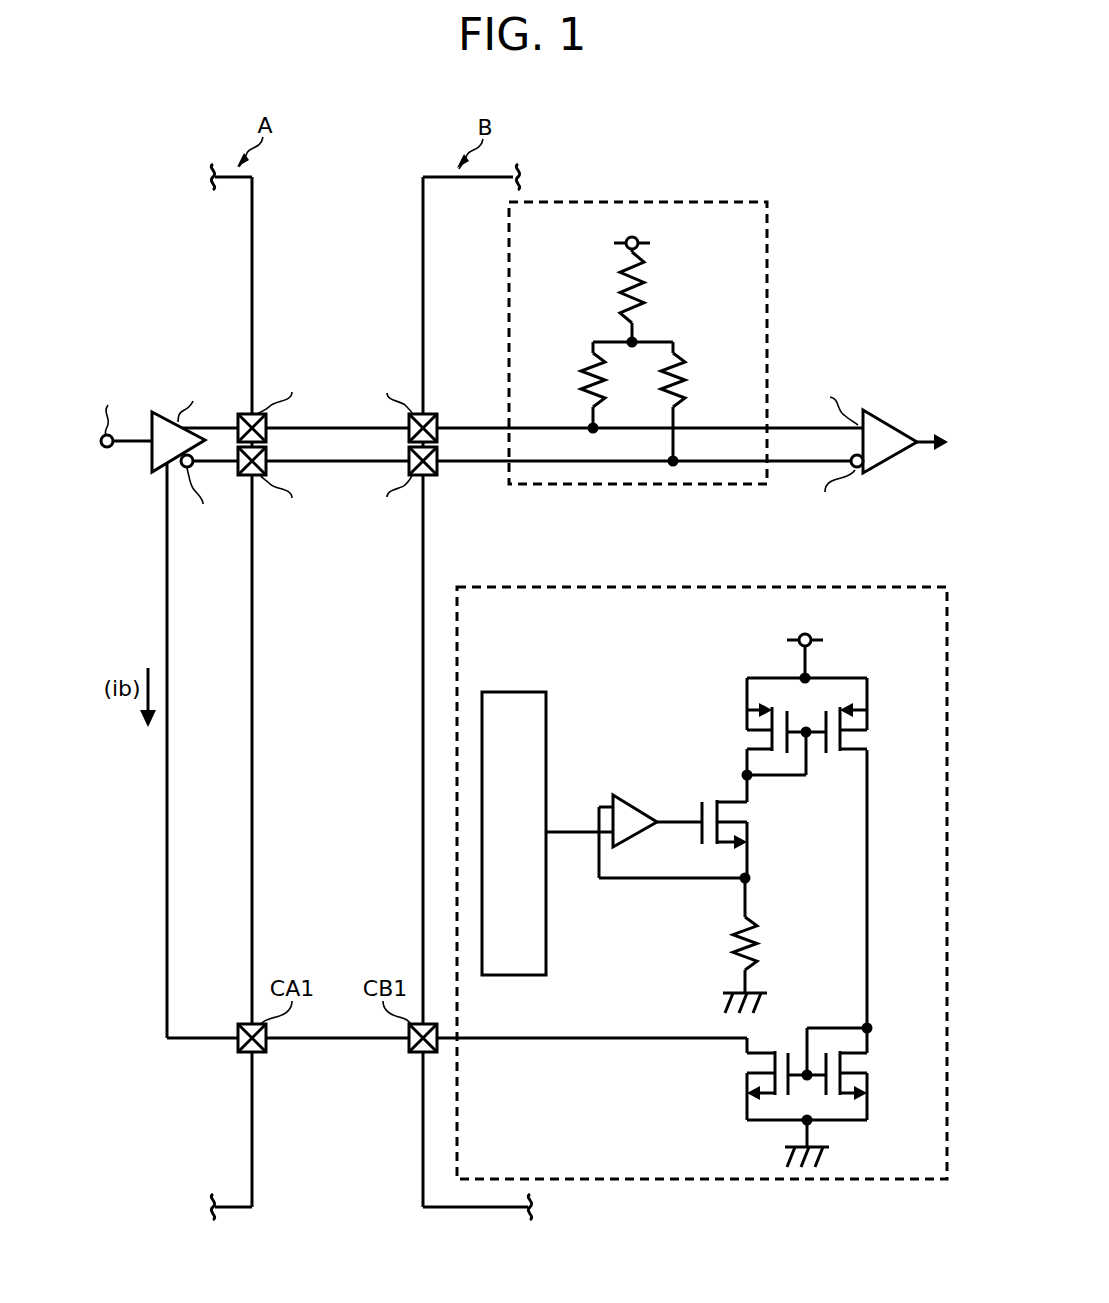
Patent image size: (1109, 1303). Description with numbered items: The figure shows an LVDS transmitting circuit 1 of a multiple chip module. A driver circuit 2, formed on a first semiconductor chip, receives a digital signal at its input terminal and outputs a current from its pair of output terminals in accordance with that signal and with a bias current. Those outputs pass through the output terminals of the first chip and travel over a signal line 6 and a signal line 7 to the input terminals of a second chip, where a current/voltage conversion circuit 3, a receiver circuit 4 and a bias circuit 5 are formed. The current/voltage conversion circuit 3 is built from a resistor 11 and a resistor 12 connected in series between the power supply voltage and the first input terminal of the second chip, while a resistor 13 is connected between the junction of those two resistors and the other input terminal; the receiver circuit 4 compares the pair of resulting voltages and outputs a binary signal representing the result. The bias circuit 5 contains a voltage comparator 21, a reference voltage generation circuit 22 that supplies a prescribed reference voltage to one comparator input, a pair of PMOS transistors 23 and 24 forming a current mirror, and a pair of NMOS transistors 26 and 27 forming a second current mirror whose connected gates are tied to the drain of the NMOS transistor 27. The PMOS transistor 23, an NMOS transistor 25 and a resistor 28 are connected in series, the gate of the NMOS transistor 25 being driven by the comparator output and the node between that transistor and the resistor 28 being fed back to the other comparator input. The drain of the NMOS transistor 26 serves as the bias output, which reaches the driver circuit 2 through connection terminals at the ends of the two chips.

The LVDS transmitting circuit 1 is at (722, 128).
The driver circuit 2 is at (162, 408).
The current/voltage conversion circuit 3 is at (775, 286).
The receiver circuit 4 is at (893, 421).
The bias circuit 5 is at (878, 572).
The signal line 6 is at (338, 427).
The signal line 7 is at (333, 464).
The resistor 11 is at (646, 293).
The resistor 12 is at (580, 382).
The resistor 13 is at (684, 389).
The voltage comparator 21 is at (640, 800).
The reference voltage generation circuit 22 is at (510, 692).
The PMOS transistor 23 is at (734, 739).
The PMOS transistor 24 is at (879, 740).
The NMOS transistor 25 is at (756, 813).
The NMOS transistor 26 is at (736, 1067).
The NMOS transistor 27 is at (879, 1067).
The resistor 28 is at (733, 948).